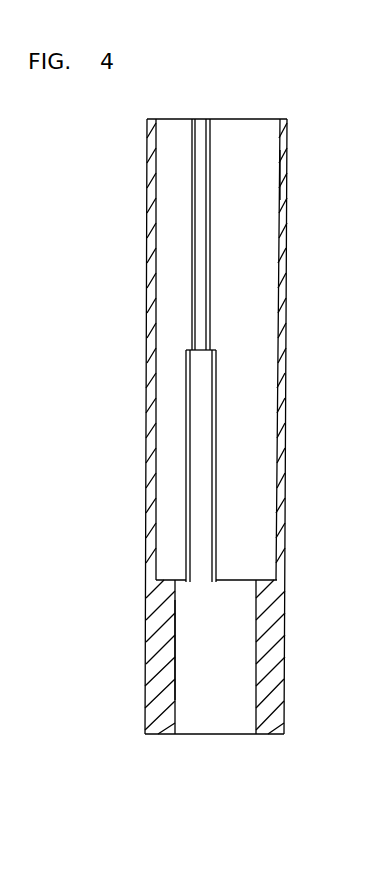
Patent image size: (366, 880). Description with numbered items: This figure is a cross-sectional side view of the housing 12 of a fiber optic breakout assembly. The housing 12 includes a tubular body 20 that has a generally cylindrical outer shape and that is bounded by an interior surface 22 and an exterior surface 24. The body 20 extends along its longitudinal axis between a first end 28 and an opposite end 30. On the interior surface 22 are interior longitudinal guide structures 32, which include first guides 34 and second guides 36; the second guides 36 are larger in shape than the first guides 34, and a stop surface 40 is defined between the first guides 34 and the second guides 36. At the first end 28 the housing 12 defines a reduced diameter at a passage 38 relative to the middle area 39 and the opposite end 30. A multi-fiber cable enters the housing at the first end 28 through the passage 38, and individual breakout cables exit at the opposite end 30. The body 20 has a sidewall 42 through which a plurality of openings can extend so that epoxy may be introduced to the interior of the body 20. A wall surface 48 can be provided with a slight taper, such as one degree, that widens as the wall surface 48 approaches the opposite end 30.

The housing 12 is at (285, 602).
The tubular body 20 is at (146, 461).
The interior surface 22 is at (280, 201).
The exterior surface 24 is at (286, 256).
The first end 28 is at (274, 738).
The opposite end 30 is at (288, 124).
The interior longitudinal guide structures 32 is at (193, 293).
The first guides 34 is at (210, 293).
The second guides 36 is at (216, 437).
The passage 38 is at (175, 633).
The middle area 39 is at (278, 383).
The stop surface 40 is at (216, 350).
The sidewall 42 is at (283, 182).
The wall surface 48 is at (160, 401).